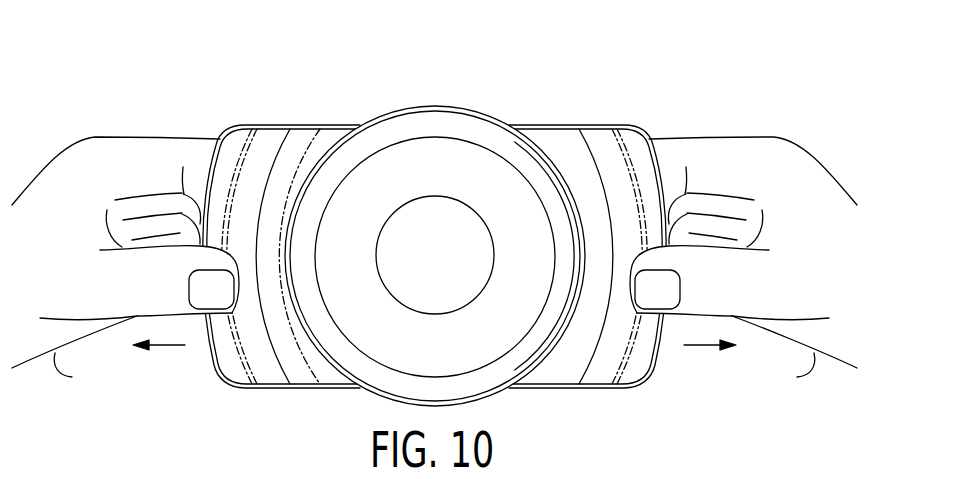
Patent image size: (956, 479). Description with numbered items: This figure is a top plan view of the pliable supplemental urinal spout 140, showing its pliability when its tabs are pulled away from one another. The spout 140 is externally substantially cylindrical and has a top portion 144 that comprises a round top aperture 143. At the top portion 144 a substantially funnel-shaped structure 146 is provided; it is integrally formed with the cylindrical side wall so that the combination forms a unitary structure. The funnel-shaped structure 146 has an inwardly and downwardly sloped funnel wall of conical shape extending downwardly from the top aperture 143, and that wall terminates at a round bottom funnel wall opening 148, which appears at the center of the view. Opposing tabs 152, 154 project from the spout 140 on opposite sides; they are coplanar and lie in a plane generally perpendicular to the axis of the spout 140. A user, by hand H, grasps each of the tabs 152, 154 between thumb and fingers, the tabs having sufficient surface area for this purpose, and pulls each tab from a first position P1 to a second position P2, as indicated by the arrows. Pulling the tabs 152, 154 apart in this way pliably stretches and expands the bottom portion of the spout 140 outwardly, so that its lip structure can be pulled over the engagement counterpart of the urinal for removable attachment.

The pliable supplemental urinal spout 140 is at (219, 78).
The round top aperture 143 is at (467, 125).
The top portion 144 is at (387, 110).
The funnel-shaped structure 146 is at (437, 168).
The bottom funnel wall opening 148 is at (448, 270).
The tab 152 is at (288, 372).
The tab 154 is at (582, 368).
The first position P1 is at (298, 140).
The second position P2 is at (236, 145).
The hand H is at (434, 265).